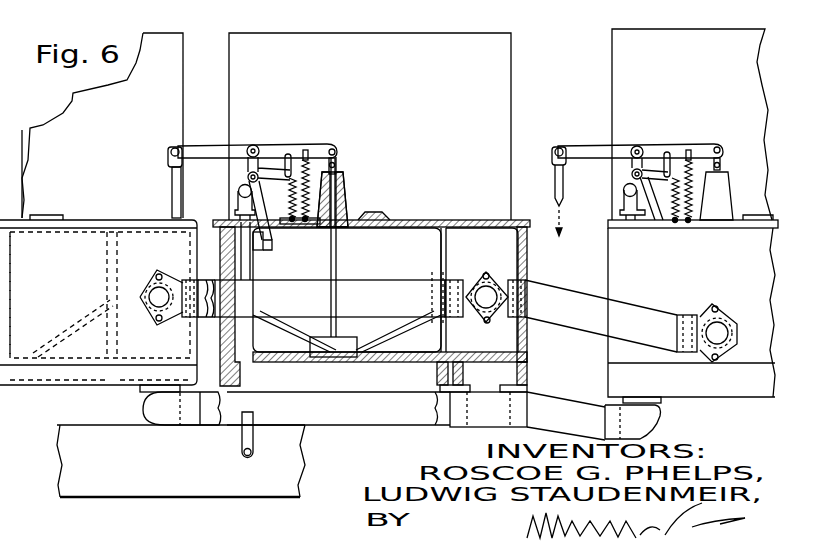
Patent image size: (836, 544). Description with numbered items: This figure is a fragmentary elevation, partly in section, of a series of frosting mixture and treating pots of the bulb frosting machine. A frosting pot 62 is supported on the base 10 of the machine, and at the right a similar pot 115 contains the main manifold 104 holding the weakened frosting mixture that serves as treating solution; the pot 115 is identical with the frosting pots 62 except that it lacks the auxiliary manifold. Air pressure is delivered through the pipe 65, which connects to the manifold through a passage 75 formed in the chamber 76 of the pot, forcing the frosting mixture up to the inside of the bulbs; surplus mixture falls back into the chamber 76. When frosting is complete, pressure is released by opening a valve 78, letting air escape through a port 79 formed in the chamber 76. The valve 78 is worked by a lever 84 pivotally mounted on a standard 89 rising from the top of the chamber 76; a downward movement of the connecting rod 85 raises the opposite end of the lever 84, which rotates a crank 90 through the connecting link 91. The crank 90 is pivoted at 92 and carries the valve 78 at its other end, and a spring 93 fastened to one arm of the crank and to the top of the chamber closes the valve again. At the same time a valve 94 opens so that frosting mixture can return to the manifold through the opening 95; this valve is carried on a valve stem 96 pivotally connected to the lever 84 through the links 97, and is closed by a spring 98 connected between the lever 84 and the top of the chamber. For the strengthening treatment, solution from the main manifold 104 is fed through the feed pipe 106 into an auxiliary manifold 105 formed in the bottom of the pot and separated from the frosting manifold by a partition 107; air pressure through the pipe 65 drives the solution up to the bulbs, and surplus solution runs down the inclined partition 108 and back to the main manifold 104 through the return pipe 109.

The base 10 is at (273, 487).
The pot 62 is at (220, 59).
The pipe 65 is at (237, 210).
The passage 75 is at (252, 263).
The chamber 76 is at (214, 346).
The valve 78 is at (264, 247).
The port 79 is at (273, 225).
The lever 84 is at (197, 147).
The connecting rod 85 is at (168, 172).
The standard 89 is at (249, 166).
The crank 90 is at (262, 170).
The connecting link 91 is at (292, 157).
The pivot 92 is at (248, 178).
The spring 93 is at (310, 176).
The valve 94 is at (342, 342).
The opening 95 is at (328, 357).
The valve stem 96 is at (339, 264).
The links 97 is at (340, 158).
The spring 98 is at (332, 180).
The main manifold 104 is at (718, 375).
The auxiliary manifold 105 is at (145, 372).
The feed pipe 106 is at (370, 421).
The partition 107 is at (443, 333).
The inclined partition 108 is at (462, 290).
The return pipe 109 is at (561, 297).
The pot 115 is at (612, 54).